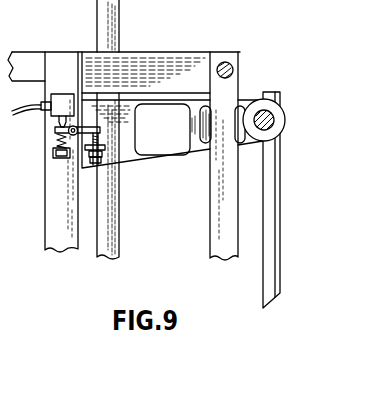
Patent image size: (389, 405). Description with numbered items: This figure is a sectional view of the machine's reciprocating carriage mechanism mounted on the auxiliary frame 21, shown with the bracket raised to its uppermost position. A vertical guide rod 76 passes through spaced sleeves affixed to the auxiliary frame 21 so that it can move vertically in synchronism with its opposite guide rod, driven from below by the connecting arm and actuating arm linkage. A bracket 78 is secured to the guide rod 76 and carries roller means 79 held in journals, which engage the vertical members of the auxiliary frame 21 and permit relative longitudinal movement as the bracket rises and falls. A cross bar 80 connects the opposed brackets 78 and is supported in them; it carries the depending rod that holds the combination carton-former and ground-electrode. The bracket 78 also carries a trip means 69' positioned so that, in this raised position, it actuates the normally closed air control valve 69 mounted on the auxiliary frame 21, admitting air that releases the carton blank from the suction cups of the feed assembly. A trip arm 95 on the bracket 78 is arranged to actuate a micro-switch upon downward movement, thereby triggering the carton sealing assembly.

The auxiliary frame 21 is at (192, 53).
The air control valve 69 is at (56, 86).
The trip means 69' is at (117, 161).
The guide rod 76 is at (118, 32).
The bracket 78 is at (168, 158).
The roller means 79 is at (204, 144).
The cross bar 80 is at (269, 113).
The trip arm 95 is at (275, 258).